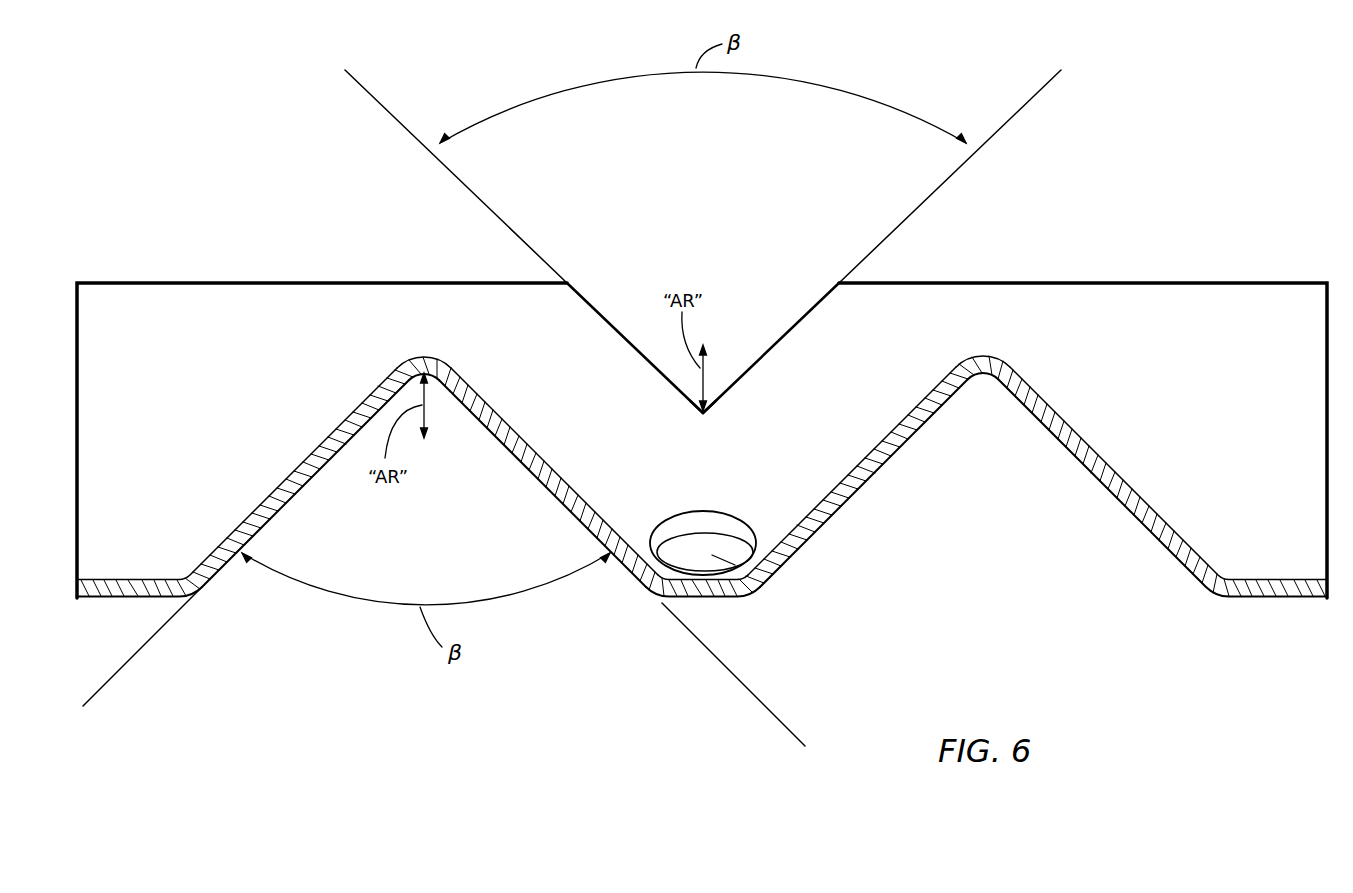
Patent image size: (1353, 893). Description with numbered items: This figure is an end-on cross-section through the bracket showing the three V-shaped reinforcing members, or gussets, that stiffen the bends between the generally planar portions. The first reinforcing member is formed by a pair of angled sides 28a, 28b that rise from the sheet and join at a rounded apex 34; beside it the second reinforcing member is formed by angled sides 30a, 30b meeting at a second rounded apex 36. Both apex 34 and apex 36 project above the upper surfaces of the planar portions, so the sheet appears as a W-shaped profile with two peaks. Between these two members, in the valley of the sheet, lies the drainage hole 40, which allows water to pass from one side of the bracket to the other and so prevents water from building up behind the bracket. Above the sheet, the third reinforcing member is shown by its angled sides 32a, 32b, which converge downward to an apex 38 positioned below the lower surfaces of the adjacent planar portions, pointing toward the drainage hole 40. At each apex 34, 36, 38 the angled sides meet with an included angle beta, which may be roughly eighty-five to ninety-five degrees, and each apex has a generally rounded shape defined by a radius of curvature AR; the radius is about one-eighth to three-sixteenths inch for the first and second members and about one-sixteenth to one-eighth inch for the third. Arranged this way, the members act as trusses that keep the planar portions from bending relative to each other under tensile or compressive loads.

The angled side of first reinforcing member 28a is at (523, 433).
The angled side of first reinforcing member 28b is at (266, 495).
The angled side of second reinforcing member 30a is at (1124, 476).
The angled side of second reinforcing member 30b is at (852, 471).
The angled side of third reinforcing member 32a is at (782, 338).
The angled side of third reinforcing member 32b is at (612, 325).
The apex of first reinforcing member 34 is at (427, 358).
The apex of second reinforcing member 36 is at (993, 356).
The apex of third reinforcing member 38 is at (705, 417).
The drainage hole 40 is at (748, 583).